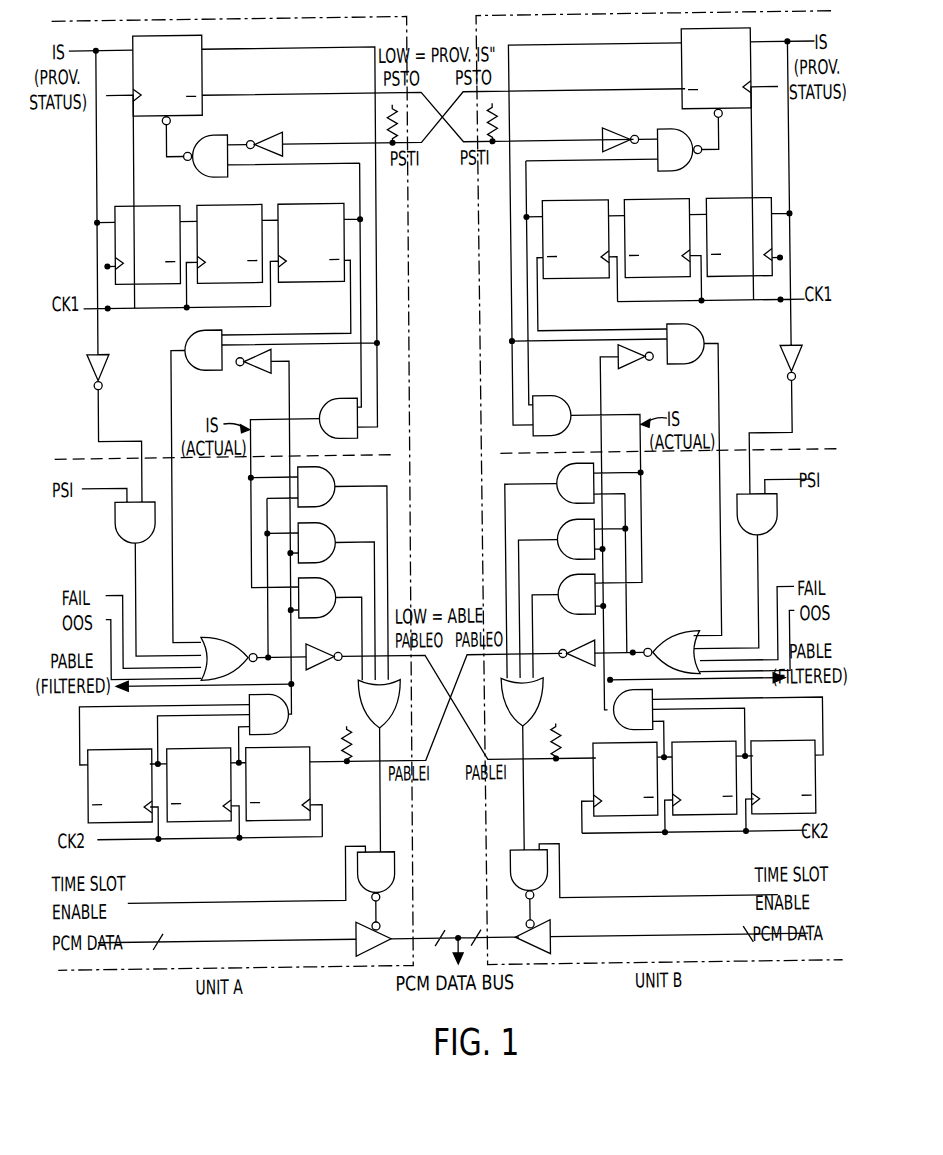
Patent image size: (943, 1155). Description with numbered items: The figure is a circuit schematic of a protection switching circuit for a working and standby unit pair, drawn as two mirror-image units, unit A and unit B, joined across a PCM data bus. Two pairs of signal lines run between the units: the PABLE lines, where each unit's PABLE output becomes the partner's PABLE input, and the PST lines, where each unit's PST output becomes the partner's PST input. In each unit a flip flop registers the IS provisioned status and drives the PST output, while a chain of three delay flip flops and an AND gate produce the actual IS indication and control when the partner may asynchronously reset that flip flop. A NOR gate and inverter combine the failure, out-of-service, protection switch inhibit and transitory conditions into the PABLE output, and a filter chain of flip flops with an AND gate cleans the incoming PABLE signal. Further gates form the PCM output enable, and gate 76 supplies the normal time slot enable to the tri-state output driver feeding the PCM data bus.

The gate 76 is at (360, 882).